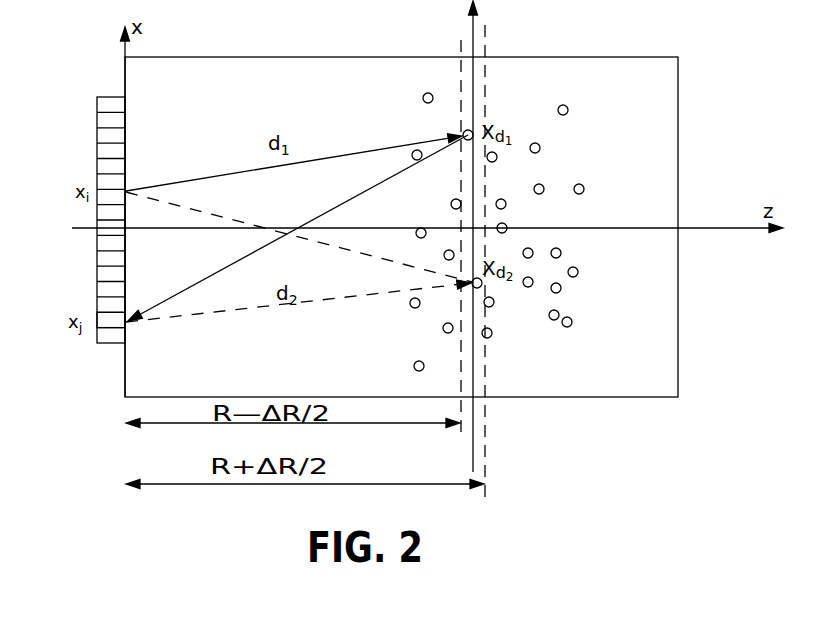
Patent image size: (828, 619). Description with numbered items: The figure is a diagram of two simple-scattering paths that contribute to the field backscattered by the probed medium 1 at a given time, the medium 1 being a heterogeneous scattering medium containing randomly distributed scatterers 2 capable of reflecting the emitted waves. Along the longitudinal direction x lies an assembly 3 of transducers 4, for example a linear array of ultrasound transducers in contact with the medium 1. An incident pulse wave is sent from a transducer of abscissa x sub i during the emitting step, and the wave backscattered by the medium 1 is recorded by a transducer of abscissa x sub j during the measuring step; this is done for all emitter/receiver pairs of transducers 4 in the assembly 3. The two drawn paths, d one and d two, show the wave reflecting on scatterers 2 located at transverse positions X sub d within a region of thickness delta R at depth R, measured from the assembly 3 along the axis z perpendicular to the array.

The medium 1 is at (655, 103).
The scatterers 2 is at (540, 148).
The assembly of transducers 3 is at (110, 350).
The transducers 4 is at (106, 322).